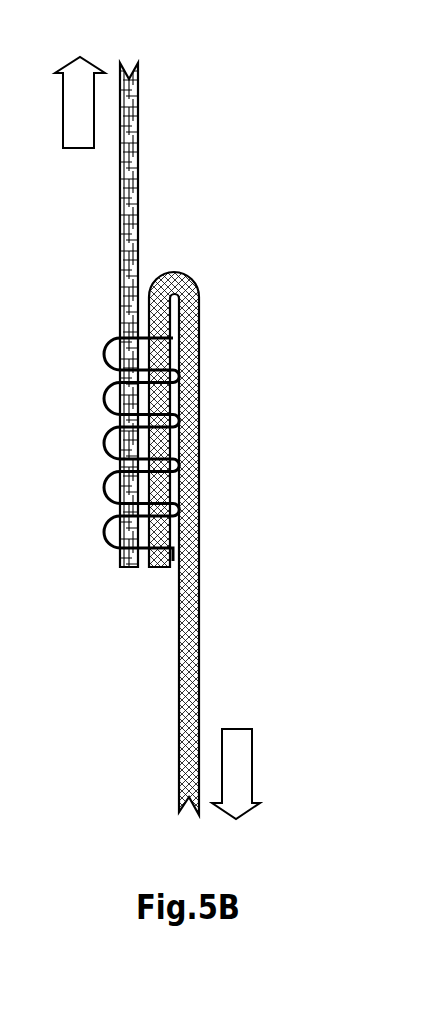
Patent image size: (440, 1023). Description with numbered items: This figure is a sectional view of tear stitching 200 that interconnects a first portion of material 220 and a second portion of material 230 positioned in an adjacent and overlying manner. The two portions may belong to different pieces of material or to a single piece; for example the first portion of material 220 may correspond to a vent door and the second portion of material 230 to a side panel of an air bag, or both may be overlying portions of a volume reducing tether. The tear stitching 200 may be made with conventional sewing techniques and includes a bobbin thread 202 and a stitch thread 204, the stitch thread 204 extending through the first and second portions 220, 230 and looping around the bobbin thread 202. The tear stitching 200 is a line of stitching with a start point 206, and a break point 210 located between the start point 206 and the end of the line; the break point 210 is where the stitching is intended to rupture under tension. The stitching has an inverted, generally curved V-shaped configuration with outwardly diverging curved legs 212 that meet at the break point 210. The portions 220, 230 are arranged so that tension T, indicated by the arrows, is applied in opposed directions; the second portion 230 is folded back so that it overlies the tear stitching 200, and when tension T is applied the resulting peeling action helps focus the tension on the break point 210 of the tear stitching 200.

The tear stitching 200 is at (147, 439).
The bobbin thread 202 is at (172, 395).
The stitch thread 204 is at (107, 502).
The start point 206 is at (109, 546).
The break point 210 is at (142, 337).
The legs 212 is at (106, 478).
The first portion of material 220 is at (122, 210).
The second portion of material 230 is at (196, 625).
The tension T is at (81, 120).